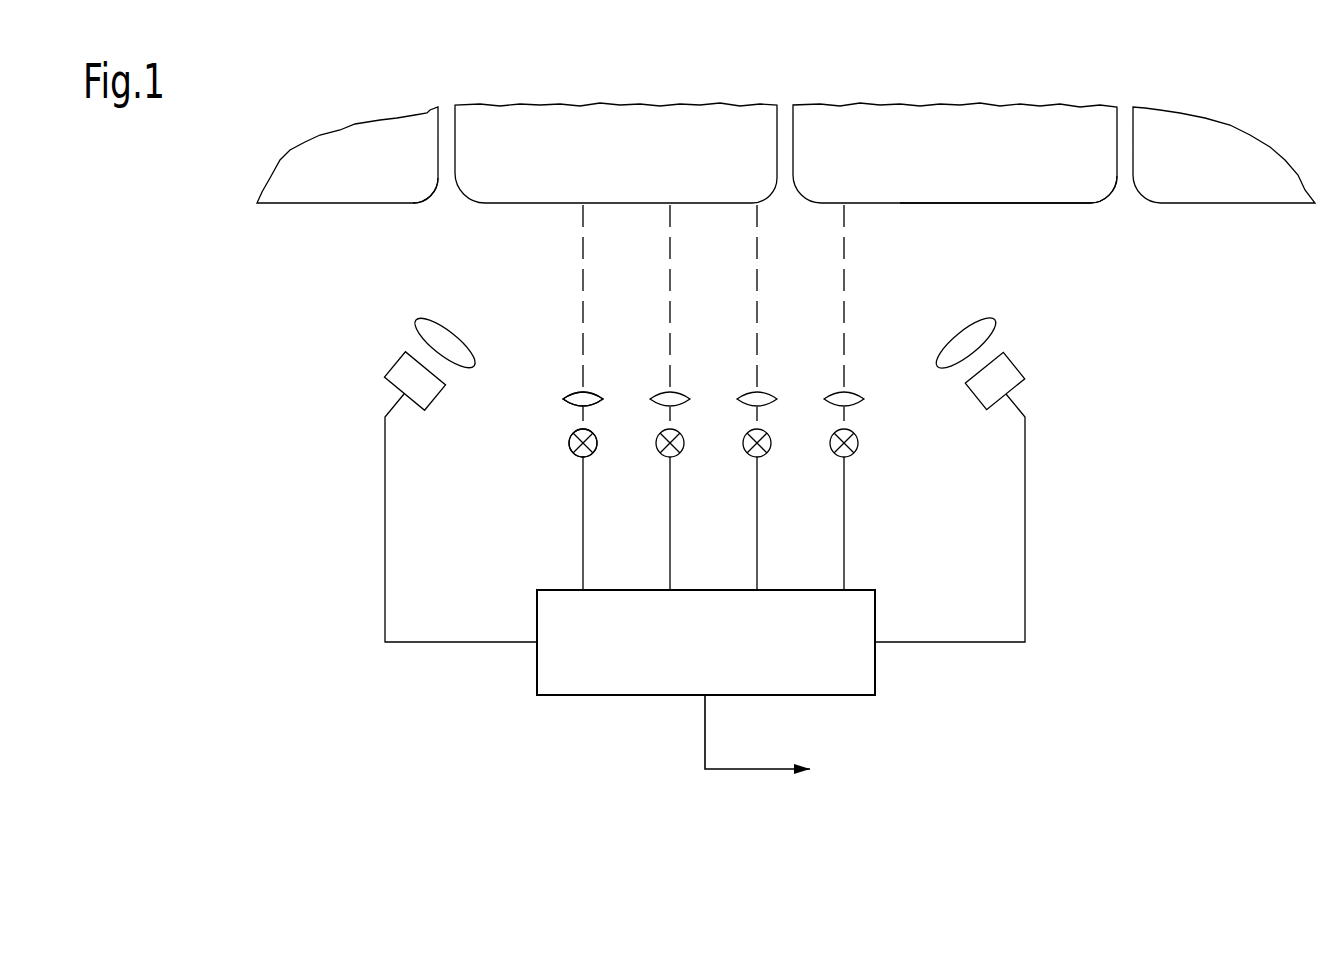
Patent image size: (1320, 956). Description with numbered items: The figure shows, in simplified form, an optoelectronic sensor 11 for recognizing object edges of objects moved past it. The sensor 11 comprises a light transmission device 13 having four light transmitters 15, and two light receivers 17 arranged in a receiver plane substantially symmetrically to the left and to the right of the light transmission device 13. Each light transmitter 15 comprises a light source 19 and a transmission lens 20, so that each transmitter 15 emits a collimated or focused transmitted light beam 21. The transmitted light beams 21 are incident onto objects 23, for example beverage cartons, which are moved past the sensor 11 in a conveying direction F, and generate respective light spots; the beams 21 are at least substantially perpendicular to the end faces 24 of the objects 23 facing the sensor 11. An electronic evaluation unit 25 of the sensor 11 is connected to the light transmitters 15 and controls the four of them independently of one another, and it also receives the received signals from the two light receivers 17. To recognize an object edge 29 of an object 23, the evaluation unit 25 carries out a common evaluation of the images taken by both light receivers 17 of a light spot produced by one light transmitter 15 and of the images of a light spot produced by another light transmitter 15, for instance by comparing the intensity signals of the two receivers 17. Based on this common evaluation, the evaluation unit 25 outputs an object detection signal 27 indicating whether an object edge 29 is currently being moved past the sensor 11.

The optoelectronic sensor 11 is at (333, 507).
The light transmission device 13 is at (556, 393).
The light transmitter 15 is at (563, 430).
The light receiver 17 is at (407, 378).
The light source 19 is at (583, 453).
The transmission lens 20 is at (592, 398).
The transmitted light beam 21 is at (583, 253).
The object 23 is at (386, 172).
The end face 24 is at (1050, 207).
The electronic evaluation unit 25 is at (722, 660).
The object detection signal 27 is at (737, 772).
The object edge 29 is at (420, 207).
The conveying direction F is at (1248, 268).